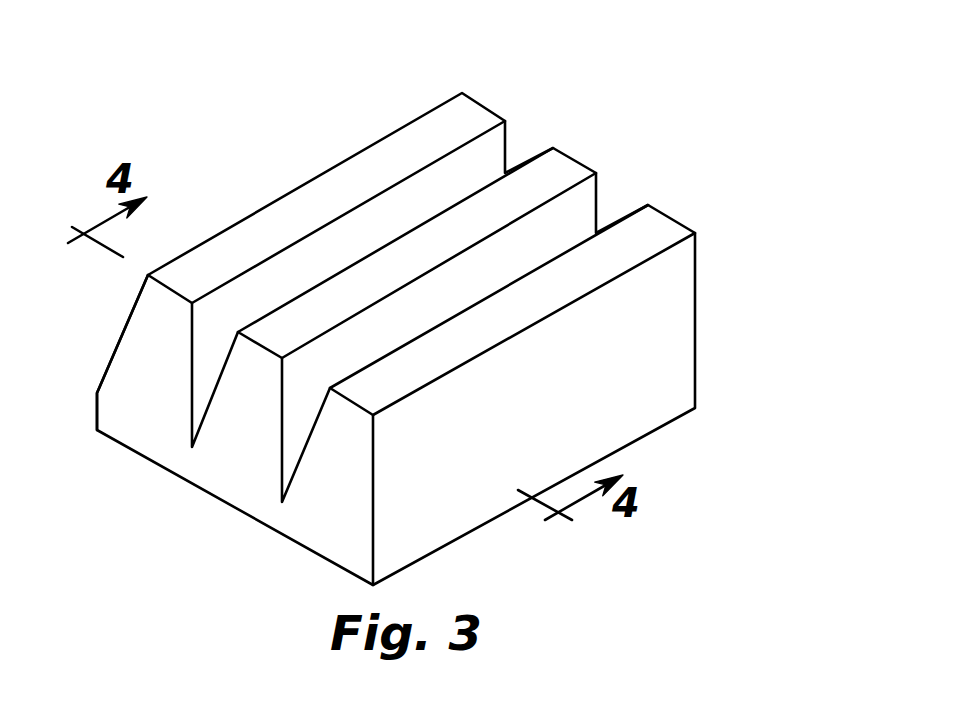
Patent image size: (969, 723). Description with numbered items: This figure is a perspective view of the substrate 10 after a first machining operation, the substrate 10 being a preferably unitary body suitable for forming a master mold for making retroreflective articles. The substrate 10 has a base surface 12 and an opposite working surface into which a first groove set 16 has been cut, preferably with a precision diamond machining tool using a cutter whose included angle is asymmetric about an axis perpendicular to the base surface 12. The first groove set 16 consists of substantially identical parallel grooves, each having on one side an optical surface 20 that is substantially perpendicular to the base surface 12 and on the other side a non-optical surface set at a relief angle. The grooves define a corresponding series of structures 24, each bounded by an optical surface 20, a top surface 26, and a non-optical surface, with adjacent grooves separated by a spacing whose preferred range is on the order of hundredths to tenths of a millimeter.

The substrate 10 is at (408, 295).
The base surface 12 is at (675, 418).
The first groove set 16 is at (421, 266).
The optical surface 20 is at (203, 373).
The structures 24 is at (135, 333).
The top surface 26 is at (185, 268).